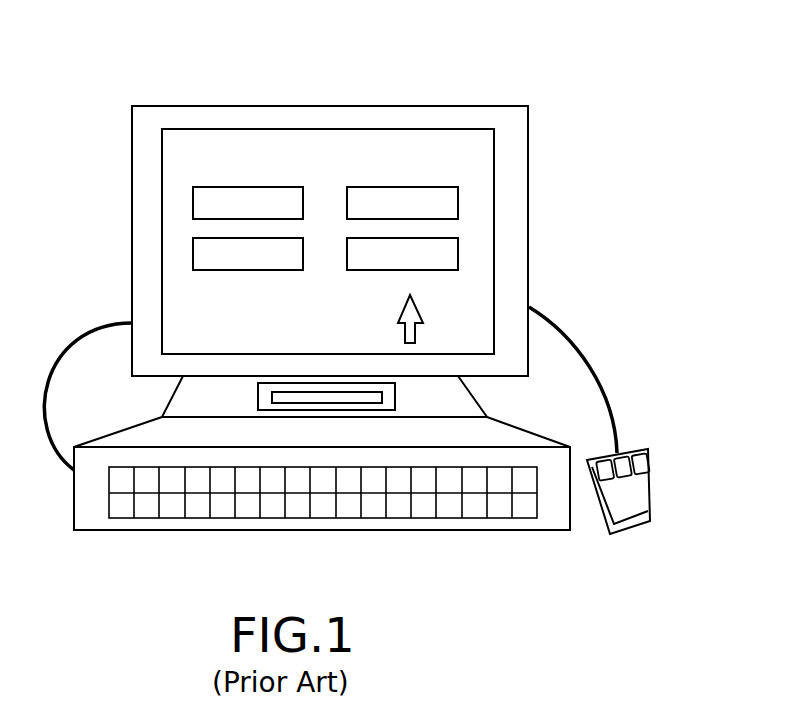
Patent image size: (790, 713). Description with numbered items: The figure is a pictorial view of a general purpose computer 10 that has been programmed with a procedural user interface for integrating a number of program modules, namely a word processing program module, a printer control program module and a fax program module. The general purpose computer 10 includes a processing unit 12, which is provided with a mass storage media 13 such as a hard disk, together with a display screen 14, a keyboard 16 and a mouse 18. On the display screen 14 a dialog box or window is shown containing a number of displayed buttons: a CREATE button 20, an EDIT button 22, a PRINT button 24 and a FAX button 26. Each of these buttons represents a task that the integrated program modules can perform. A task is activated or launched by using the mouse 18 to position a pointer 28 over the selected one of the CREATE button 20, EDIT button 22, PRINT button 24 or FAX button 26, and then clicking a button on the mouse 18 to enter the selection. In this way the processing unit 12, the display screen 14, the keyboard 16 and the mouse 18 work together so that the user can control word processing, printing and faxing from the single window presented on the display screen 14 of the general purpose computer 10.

The general purpose computer 10 is at (88, 109).
The processing unit 12 is at (443, 401).
The mass storage media 13 is at (265, 389).
The display screen 14 is at (494, 223).
The keyboard 16 is at (403, 531).
The mouse 18 is at (653, 495).
The CREATE button 20 is at (193, 205).
The EDIT button 22 is at (193, 252).
The PRINT button 24 is at (458, 204).
The FAX button 26 is at (458, 258).
The pointer 28 is at (415, 331).